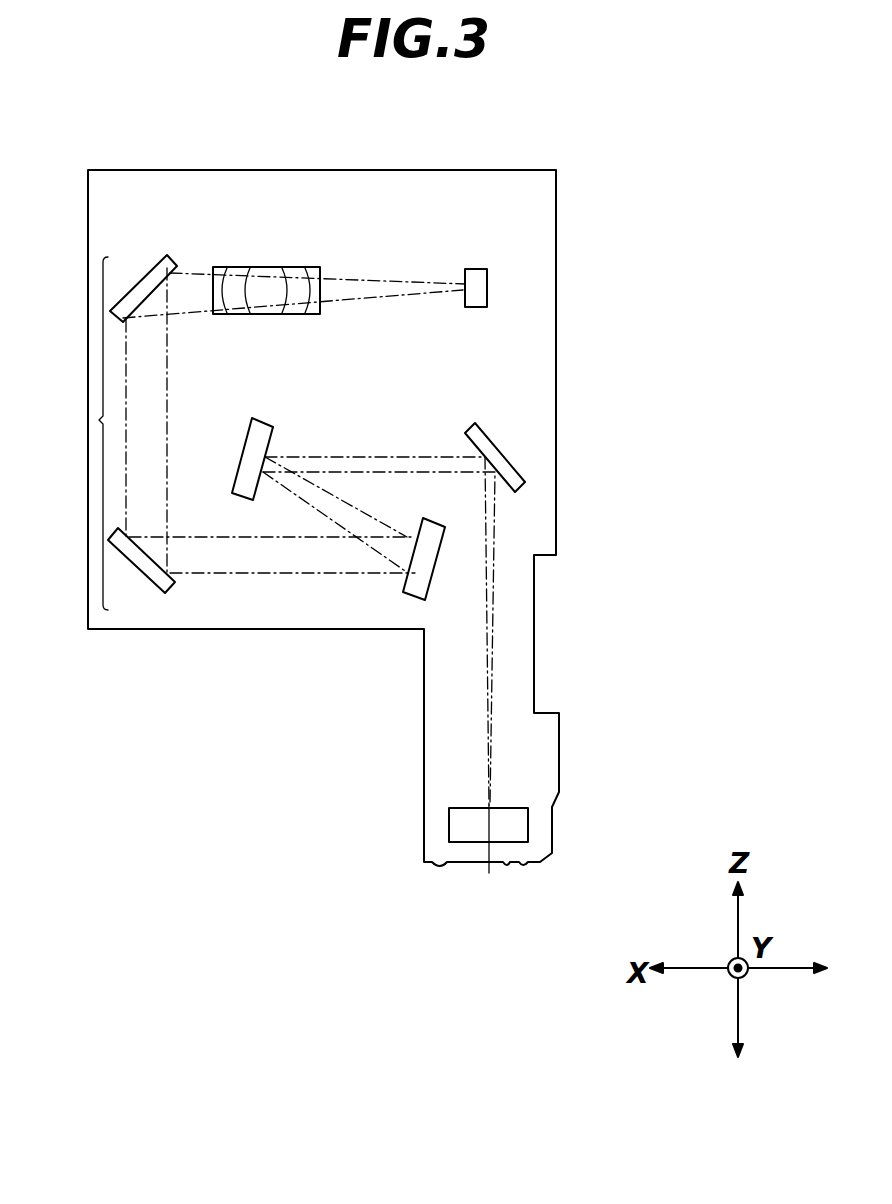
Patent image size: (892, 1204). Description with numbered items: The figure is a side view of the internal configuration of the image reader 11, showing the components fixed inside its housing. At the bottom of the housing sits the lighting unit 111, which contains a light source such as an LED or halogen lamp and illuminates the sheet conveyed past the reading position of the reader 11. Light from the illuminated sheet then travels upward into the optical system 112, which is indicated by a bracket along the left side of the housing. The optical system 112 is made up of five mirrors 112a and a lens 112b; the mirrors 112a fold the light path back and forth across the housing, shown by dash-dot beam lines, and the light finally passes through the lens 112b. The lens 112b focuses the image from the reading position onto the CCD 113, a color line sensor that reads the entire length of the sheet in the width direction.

The reader 11 is at (456, 190).
The lighting unit 111 is at (518, 826).
The optical system 112 is at (99, 420).
The mirror 112a is at (168, 258).
The lens 112b is at (268, 283).
The CCD 113 is at (479, 277).